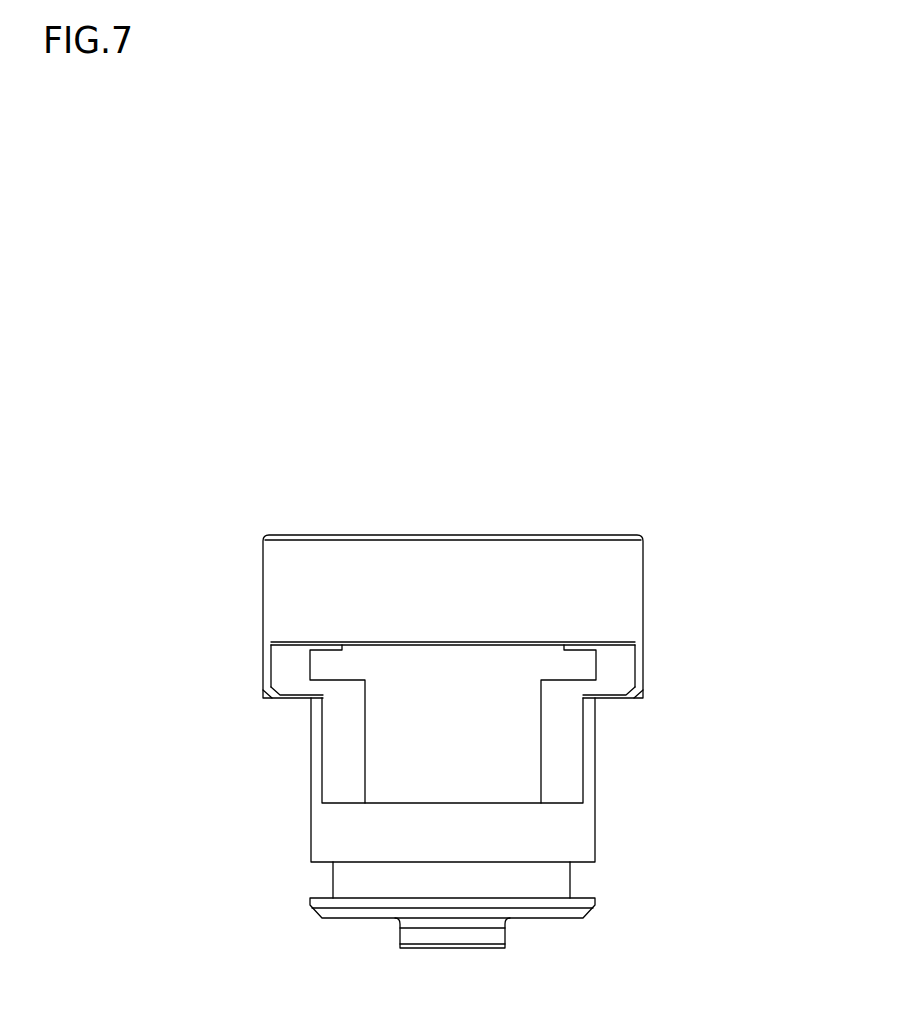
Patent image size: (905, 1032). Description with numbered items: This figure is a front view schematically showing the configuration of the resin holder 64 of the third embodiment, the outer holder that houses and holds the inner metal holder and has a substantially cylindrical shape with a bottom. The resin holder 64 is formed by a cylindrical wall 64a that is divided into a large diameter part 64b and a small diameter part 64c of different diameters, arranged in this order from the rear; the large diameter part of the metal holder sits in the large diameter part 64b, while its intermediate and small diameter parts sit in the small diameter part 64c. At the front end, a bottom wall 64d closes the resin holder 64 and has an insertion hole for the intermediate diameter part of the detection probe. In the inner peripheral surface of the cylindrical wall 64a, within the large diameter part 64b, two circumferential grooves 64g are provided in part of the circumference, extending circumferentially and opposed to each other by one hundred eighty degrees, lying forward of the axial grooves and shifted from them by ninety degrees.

The resin holder 64 is at (525, 478).
The cylindrical wall 64a is at (264, 690).
The large diameter part 64b is at (262, 583).
The small diameter part 64c is at (310, 818).
The bottom wall 64d is at (553, 911).
The circumferential grooves 64g is at (318, 661).